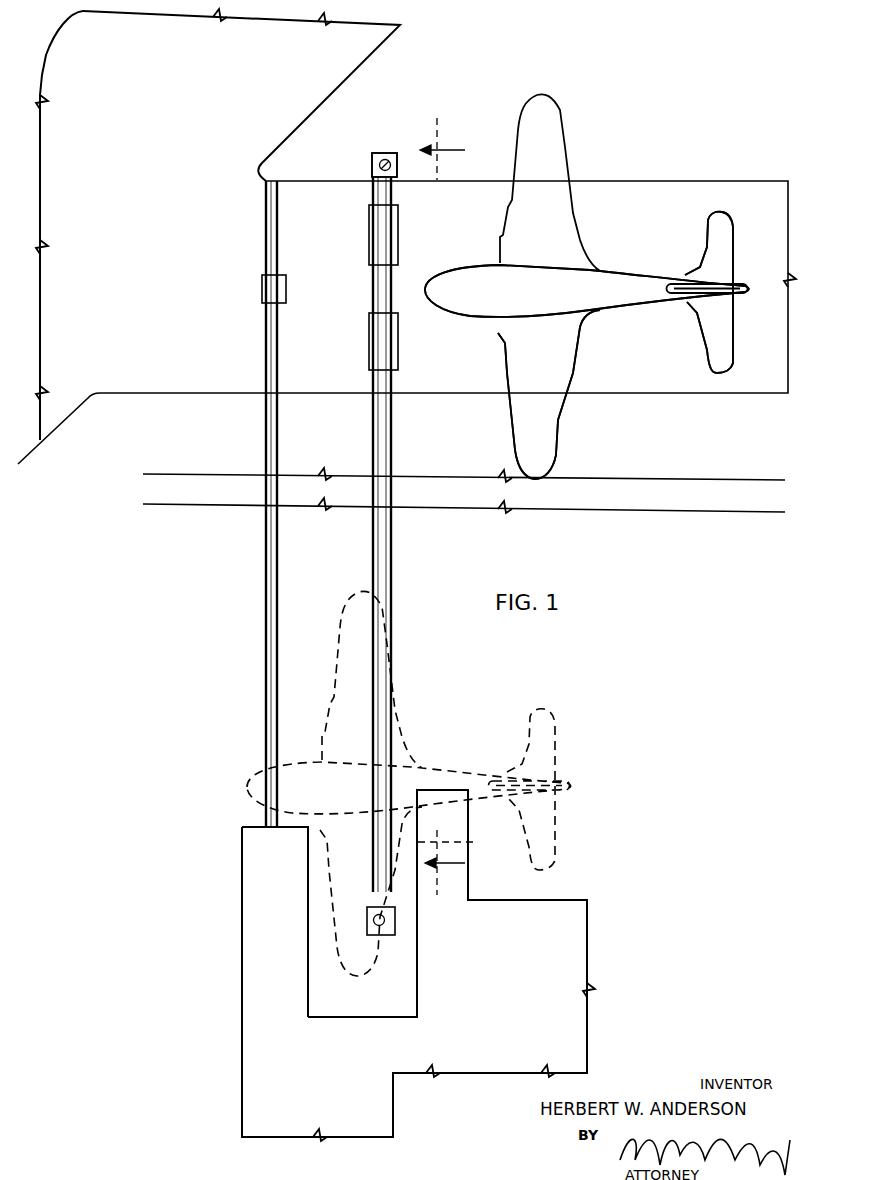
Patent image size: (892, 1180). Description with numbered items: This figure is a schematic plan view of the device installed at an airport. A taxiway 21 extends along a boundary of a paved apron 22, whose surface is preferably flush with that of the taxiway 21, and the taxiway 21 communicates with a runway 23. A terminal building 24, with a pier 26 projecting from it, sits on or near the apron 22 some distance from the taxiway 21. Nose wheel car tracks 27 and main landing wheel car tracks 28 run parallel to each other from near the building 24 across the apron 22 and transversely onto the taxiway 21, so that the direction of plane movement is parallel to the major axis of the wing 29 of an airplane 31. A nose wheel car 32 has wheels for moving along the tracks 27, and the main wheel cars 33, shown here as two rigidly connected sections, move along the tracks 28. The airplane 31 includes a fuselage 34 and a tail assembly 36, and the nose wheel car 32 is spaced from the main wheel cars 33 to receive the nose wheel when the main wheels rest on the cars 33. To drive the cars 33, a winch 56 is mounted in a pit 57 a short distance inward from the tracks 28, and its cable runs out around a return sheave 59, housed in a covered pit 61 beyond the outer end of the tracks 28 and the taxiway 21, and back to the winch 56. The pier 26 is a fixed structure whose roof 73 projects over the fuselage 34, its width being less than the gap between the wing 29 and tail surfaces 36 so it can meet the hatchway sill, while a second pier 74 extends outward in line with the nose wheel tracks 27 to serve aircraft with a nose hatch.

The taxiway 21 is at (608, 186).
The paved apron 22 is at (697, 545).
The runway 23 is at (370, 44).
The terminal building 24 is at (558, 1034).
The pier 26 is at (455, 832).
The nose wheel car tracks 27 is at (275, 600).
The main landing wheel car tracks 28 is at (390, 600).
The wing 29 is at (556, 438).
The airplane 31 is at (598, 291).
The nose wheel car 32 is at (272, 292).
The main wheel cars 33 is at (384, 234).
The fuselage 34 is at (495, 298).
The tail assembly 36 is at (722, 338).
The winch 56 is at (376, 912).
The pit 57 is at (386, 930).
The return sheave 59 is at (388, 157).
The pit 61 is at (380, 154).
The roof 73 is at (445, 795).
The pier 74 is at (258, 856).